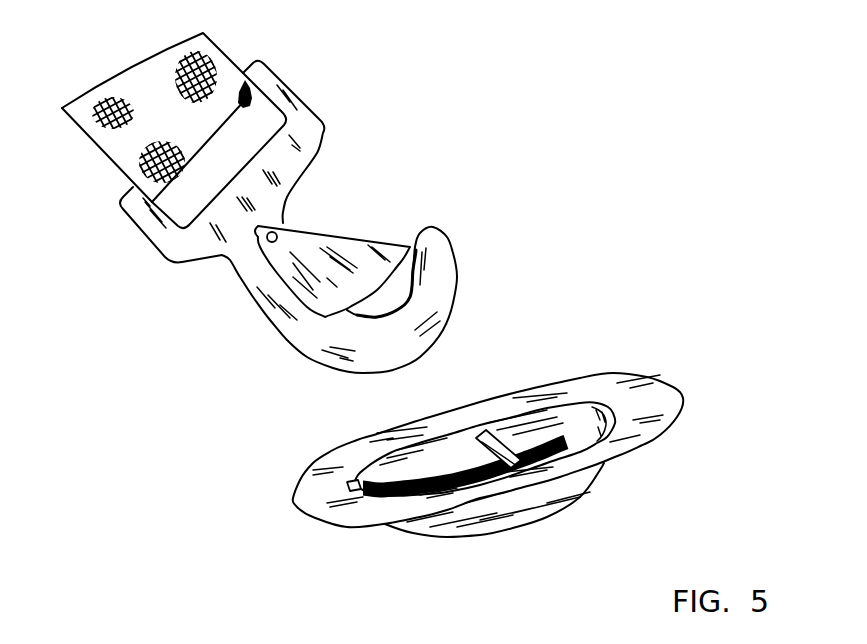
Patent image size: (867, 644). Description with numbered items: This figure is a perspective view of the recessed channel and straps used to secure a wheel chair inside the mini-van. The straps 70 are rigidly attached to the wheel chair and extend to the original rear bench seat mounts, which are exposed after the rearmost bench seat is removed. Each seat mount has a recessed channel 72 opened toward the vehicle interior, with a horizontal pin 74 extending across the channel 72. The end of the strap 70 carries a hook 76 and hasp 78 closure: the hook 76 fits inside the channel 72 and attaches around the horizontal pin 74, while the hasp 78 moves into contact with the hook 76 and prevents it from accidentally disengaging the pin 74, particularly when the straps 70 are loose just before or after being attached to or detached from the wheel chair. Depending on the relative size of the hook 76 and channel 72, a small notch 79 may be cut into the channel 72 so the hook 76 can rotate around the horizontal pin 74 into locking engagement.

The straps 70 is at (133, 147).
The recessed channel 72 is at (467, 411).
The horizontal pin 74 is at (477, 436).
The hook 76 is at (440, 240).
The hasp 78 is at (325, 238).
The notch 79 is at (340, 493).